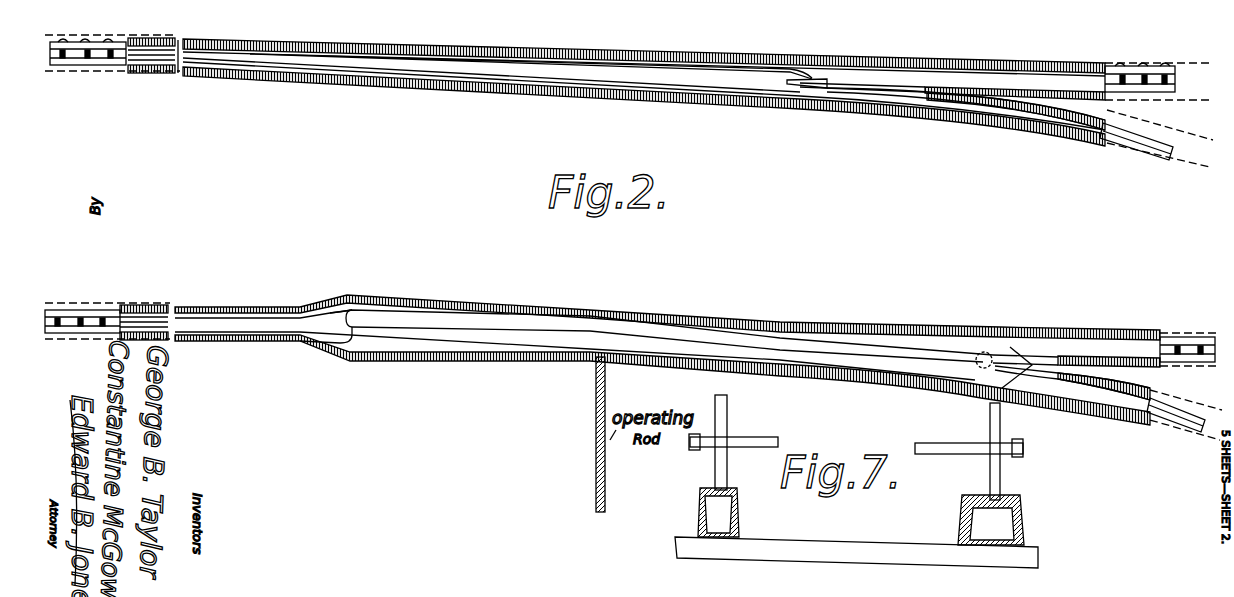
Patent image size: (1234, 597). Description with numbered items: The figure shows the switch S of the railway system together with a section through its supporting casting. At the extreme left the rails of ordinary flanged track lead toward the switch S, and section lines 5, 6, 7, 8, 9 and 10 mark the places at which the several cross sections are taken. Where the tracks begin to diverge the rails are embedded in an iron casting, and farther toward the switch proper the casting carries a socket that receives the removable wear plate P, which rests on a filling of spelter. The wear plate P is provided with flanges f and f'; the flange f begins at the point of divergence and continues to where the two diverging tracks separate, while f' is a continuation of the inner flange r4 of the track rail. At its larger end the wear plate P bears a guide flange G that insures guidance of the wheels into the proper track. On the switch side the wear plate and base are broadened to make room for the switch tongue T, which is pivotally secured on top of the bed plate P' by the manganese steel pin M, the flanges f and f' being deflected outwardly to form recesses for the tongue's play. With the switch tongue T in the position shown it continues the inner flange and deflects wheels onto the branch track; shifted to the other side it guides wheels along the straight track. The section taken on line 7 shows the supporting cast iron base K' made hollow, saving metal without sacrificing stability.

In FIG. 2, the section line 5— 5 is at (70, 250).
In FIG. 7, the section line 5— 5 is at (70, 250).
In FIG. 2, the section line 6— 6 is at (336, 250).
In FIG. 7, the section line 6— 6 is at (336, 250).
In FIG. 2, the section line 7— 7 is at (424, 250).
In FIG. 7, the section line 7— 7 is at (424, 250).
In FIG. 2, the section line 8— 8 is at (809, 250).
In FIG. 7, the section line 8— 8 is at (809, 250).
In FIG. 2, the section line 9— 9 is at (984, 250).
In FIG. 7, the section line 9— 9 is at (984, 250).
In FIG. 2, the section line 10— 10 is at (1045, 250).
In FIG. 7, the section line 10— 10 is at (1045, 250).
In FIG. 2, the wear plate P is at (644, 45).
In FIG. 7, the wear or bed plate P' is at (667, 313).
In FIG. 2, the flange f is at (531, 46).
In FIG. 7, the flange f is at (349, 308).
In FIG. 2, the flange f' is at (644, 106).
In FIG. 7, the flange f' is at (662, 380).
In FIG. 2, the inner rail flange r4 is at (226, 76).
In FIG. 7, the inner rail flange r4 is at (238, 317).
In FIG. 2, the switch S is at (660, 23).
In FIG. 2, the guide flange G is at (812, 80).
In FIG. 7, the switch tongue T is at (483, 323).
In FIG. 7, the manganese steel pin M is at (986, 352).
In FIG. 7, the cast iron base K' is at (866, 481).